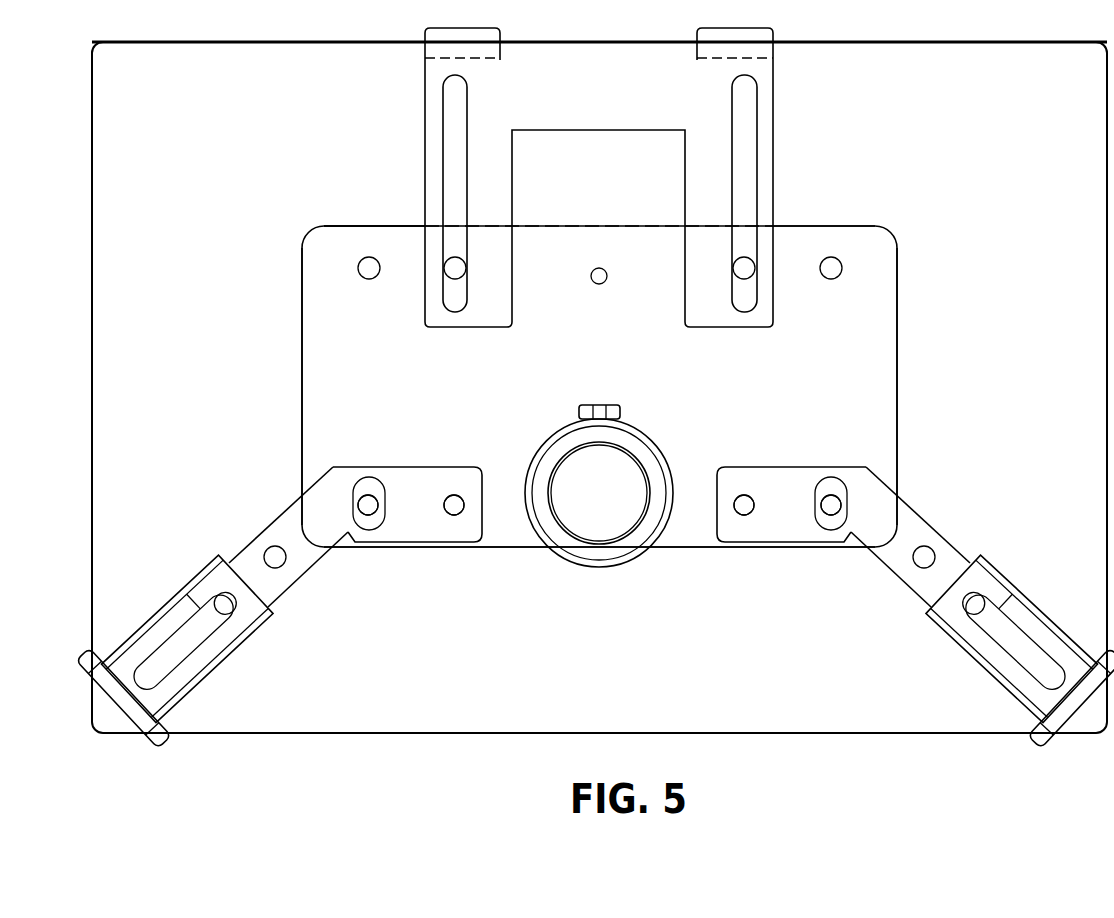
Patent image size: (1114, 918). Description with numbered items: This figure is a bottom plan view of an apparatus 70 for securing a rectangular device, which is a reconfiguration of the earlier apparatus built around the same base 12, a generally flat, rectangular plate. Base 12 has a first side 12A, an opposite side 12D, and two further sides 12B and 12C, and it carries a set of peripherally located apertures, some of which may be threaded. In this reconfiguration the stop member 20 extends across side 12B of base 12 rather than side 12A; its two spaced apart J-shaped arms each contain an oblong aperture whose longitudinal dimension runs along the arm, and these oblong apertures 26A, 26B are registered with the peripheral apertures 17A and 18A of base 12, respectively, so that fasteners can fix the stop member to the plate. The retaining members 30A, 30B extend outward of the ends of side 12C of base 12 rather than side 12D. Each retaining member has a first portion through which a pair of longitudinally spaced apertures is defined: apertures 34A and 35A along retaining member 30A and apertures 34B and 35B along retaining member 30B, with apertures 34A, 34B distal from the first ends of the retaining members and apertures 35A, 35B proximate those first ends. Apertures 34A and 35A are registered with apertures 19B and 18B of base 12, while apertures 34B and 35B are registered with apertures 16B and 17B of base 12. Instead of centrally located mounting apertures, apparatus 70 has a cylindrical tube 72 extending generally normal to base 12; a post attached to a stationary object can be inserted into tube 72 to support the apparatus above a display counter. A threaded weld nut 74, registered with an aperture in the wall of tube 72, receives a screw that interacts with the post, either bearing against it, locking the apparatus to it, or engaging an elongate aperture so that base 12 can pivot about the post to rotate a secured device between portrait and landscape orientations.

The base 12 is at (611, 381).
The first side of base 12A is at (903, 362).
The side of base 12B is at (616, 217).
The side of base 12C is at (521, 556).
The side of base 12D is at (296, 362).
The apparatus 70 is at (425, 226).
The stop member 20 is at (773, 304).
The oblong aperture 26A is at (446, 168).
The oblong aperture 26B is at (754, 168).
The peripherally located aperture 18A is at (472, 266).
The peripherally located aperture 17A is at (729, 265).
The cylindrical tube 72 is at (642, 424).
The threaded weld nut 74 is at (580, 407).
The retaining member 30A is at (369, 467).
The retaining member 30B is at (845, 467).
The aperture 34A is at (386, 482).
The aperture 34B is at (824, 487).
The aperture 35A is at (466, 500).
The aperture 35B is at (735, 499).
The peripherally located aperture 18B is at (455, 514).
The peripherally located aperture 19B is at (371, 514).
The peripherally located aperture 17B is at (748, 513).
The peripherally located aperture 16B is at (830, 515).